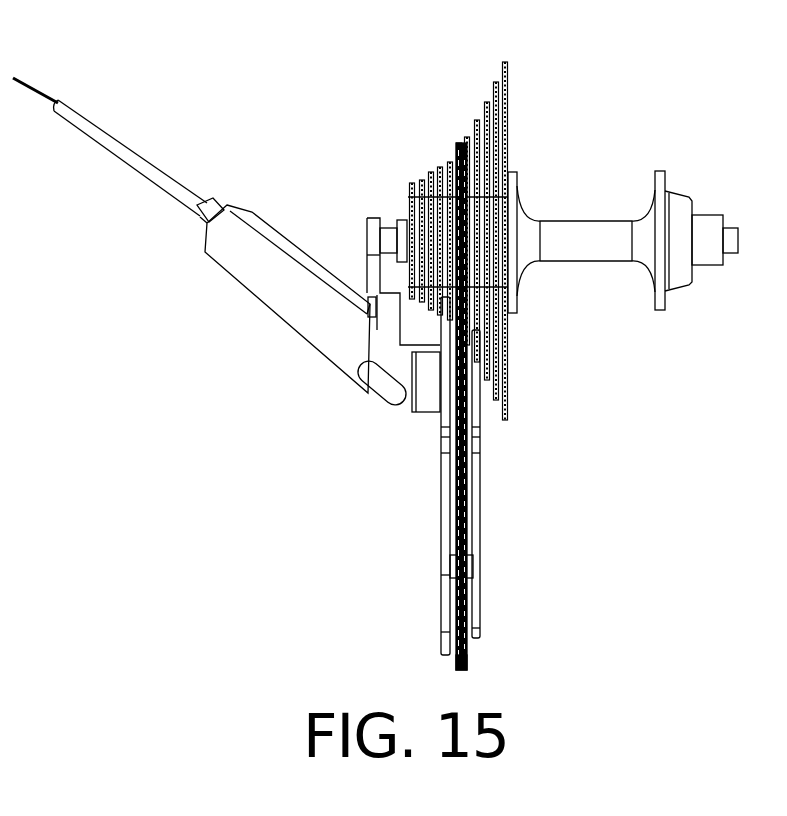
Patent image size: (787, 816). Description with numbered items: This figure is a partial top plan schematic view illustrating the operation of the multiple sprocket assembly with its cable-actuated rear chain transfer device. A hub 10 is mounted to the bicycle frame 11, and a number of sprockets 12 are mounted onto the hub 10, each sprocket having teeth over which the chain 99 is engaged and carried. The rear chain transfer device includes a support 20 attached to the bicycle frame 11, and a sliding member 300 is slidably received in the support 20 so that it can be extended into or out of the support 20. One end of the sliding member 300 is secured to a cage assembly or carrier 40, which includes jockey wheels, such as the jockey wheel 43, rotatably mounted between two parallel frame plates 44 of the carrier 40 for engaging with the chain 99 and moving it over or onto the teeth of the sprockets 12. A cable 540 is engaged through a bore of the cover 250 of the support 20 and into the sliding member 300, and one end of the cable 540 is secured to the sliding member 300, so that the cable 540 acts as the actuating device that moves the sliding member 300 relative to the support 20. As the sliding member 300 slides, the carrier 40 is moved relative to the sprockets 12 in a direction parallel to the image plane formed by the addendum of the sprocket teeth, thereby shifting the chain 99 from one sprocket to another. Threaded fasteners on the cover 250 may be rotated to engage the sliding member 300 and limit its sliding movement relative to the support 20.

The hub 10 is at (707, 218).
The bicycle frame 11 is at (365, 232).
The sprockets 12 is at (476, 120).
The support 20 is at (293, 338).
The carrier 40 is at (481, 473).
The jockey wheel 43 is at (473, 597).
The frame plates 44 is at (437, 535).
The chain 99 is at (470, 653).
The cover 250 is at (202, 245).
The sliding member 300 is at (380, 396).
The cable 540 is at (130, 163).